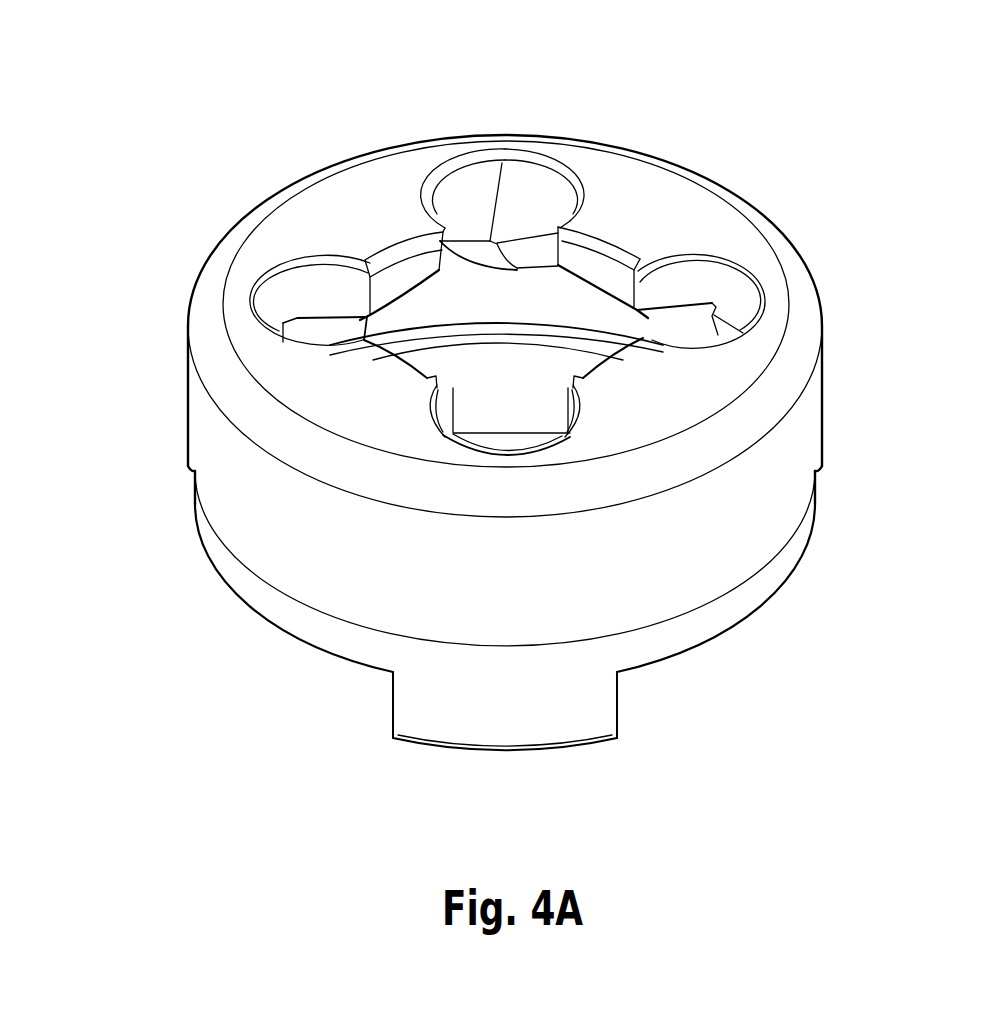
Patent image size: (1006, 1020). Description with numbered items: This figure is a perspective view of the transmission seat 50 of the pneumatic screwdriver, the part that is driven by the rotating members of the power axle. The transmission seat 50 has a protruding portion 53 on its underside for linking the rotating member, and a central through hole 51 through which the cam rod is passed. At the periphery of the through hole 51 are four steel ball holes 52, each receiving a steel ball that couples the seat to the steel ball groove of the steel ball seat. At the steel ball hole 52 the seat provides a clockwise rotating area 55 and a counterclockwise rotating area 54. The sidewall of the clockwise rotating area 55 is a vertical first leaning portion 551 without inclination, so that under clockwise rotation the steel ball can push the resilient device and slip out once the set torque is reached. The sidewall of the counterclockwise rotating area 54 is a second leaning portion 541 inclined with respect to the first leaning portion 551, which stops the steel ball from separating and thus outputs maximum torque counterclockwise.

The transmission seat 50 is at (803, 450).
The through hole 51 is at (542, 370).
The steel ball hole 52 is at (320, 330).
The protruding portion 53 is at (600, 703).
The counterclockwise rotating area 54 is at (458, 184).
The second leaning portion 541 is at (405, 248).
The clockwise rotating area 55 is at (541, 188).
The first leaning portion 551 is at (592, 236).